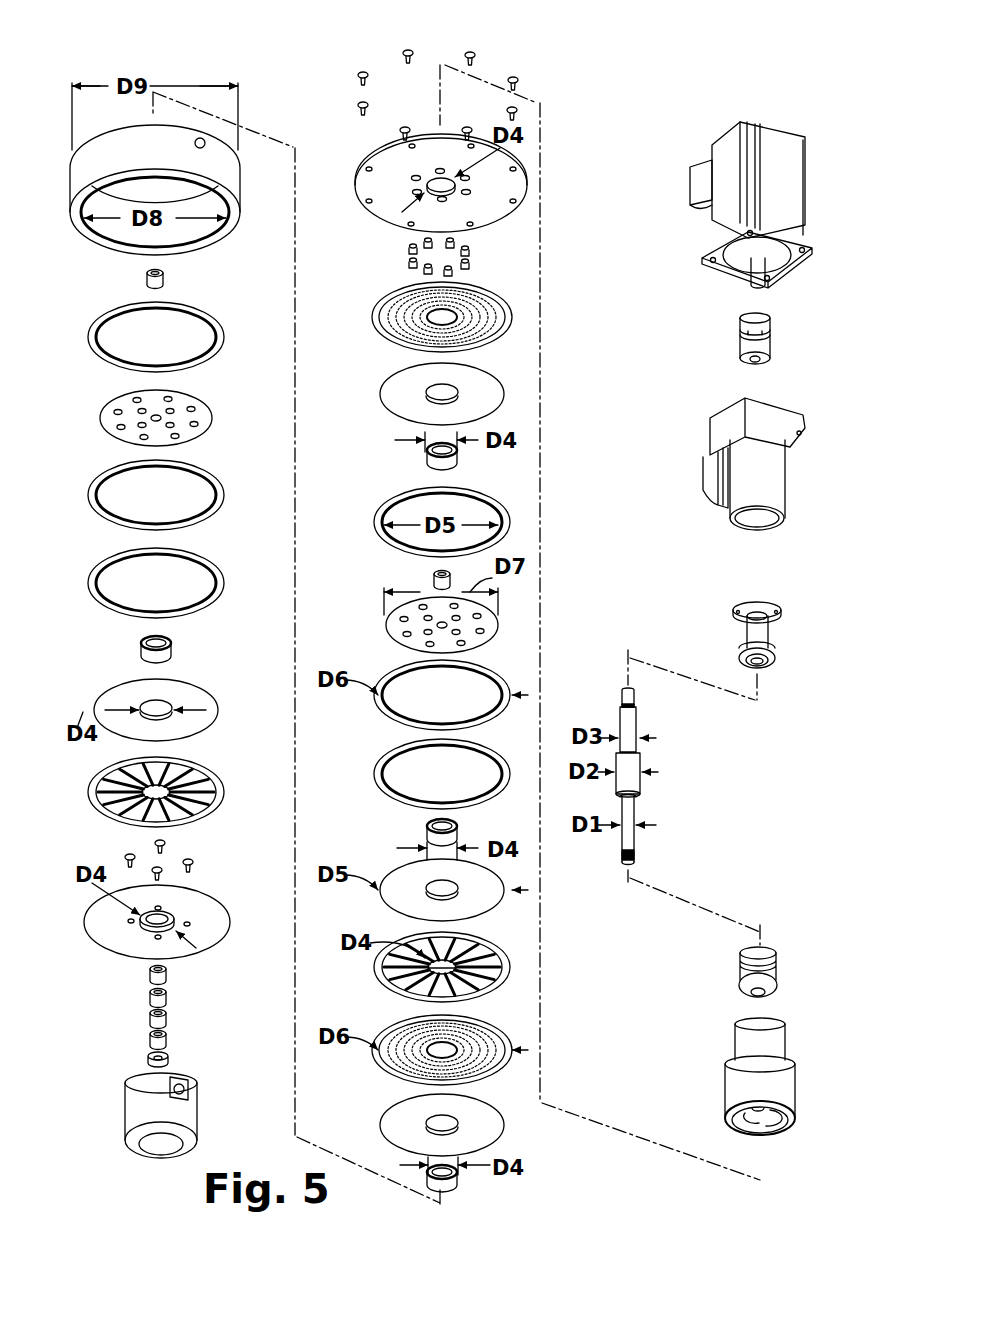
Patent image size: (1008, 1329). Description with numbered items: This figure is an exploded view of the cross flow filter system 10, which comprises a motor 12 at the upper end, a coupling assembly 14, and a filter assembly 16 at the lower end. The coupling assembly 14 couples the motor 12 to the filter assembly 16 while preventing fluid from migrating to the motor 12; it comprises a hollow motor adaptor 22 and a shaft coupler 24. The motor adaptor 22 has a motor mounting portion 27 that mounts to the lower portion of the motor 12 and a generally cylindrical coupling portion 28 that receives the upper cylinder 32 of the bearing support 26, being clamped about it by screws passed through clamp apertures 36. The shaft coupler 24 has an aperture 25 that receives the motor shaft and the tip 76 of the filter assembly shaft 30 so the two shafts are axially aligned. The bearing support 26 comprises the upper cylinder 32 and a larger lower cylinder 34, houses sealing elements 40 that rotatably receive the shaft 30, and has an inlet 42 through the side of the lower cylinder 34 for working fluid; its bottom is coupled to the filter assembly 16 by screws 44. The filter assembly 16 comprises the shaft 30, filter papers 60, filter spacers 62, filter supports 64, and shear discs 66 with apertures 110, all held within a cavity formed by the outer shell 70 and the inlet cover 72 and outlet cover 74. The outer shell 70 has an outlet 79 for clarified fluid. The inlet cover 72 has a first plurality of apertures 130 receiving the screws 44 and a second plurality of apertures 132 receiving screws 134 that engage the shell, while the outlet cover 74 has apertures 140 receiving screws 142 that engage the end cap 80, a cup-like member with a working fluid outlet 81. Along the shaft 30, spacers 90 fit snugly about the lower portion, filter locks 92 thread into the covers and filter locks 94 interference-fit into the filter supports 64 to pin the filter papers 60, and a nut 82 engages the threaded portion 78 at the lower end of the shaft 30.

The cross flow filter system 10 is at (786, 80).
The motor 12 is at (838, 128).
The coupling assembly 14 is at (840, 300).
The filter assembly 16 is at (655, 62).
The motor adaptor 22 is at (763, 471).
The shaft coupler 24 is at (760, 350).
The aperture 25 is at (748, 361).
The bearing support 26 is at (763, 1100).
The motor mounting portion 27 is at (766, 408).
The coupling portion 28 is at (768, 467).
The shaft 30 is at (637, 778).
The upper cylinder 32 is at (745, 1047).
The lower cylinder 34 is at (745, 1090).
The clamp apertures 36 is at (722, 482).
The sealing elements 40 is at (788, 597).
The inlet 42 is at (763, 1125).
The screws 44 is at (420, 270).
The filter papers 60 is at (200, 430).
The filter spacers 62 is at (106, 362).
The filter supports 64 is at (210, 818).
The shear discs 66 is at (395, 628).
The outer shell 70 is at (174, 209).
The inlet cover 72 is at (422, 191).
The outlet cover 74 is at (176, 934).
The tip 76 is at (622, 703).
The threaded portion 78 is at (622, 856).
The outlet 79 is at (204, 147).
The end cap 80 is at (158, 1109).
The working fluid outlet 81 is at (190, 1082).
The nut 82 is at (147, 1057).
The spacers 90 is at (147, 278).
The filter locks 92 is at (175, 651).
The filter locks 94 is at (430, 833).
The apertures 110 is at (158, 417).
The first plurality of apertures 130 is at (450, 201).
The second plurality of apertures 132 is at (362, 172).
The screws 134 is at (358, 103).
The apertures 140 is at (188, 923).
The screws 142 is at (128, 855).